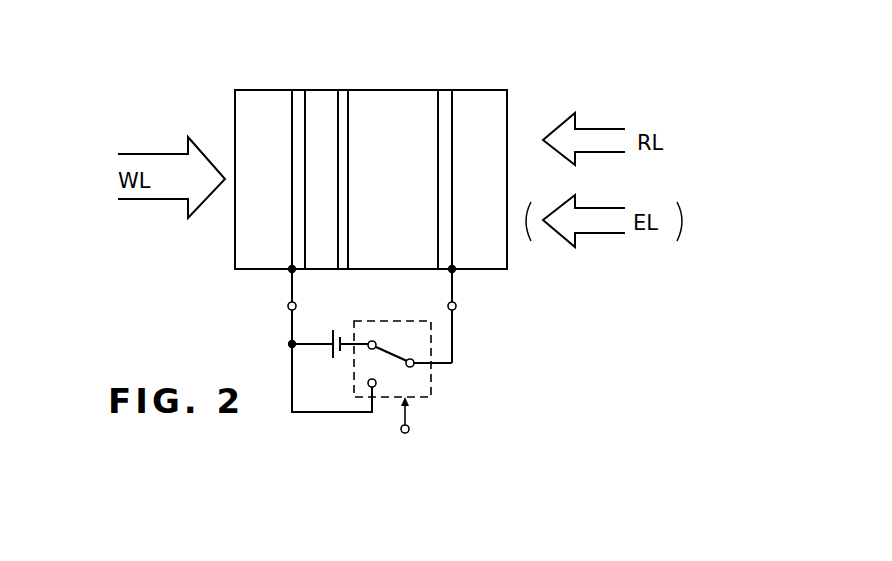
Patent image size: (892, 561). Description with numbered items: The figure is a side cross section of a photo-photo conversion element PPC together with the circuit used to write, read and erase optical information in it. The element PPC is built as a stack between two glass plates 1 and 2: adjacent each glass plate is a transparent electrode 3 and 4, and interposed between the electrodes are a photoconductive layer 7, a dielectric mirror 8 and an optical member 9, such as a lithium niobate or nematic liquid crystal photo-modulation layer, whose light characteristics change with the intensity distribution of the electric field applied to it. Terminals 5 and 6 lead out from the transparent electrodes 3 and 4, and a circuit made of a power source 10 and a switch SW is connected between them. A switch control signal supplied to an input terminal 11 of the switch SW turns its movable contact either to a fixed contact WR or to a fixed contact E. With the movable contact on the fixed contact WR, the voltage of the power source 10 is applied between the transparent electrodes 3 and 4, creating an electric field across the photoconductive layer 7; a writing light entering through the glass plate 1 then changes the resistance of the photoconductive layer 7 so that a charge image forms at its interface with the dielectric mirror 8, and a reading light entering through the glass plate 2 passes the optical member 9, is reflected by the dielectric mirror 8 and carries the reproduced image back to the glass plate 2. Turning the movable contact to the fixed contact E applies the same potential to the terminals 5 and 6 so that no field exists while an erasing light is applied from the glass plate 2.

The glass plate 1 is at (250, 99).
The glass plate 2 is at (498, 107).
The transparent electrode 3 is at (298, 97).
The transparent electrode 4 is at (445, 97).
The terminal 5 is at (288, 306).
The terminal 6 is at (456, 306).
The photoconductive layer 7 is at (318, 97).
The dielectric mirror 8 is at (343, 97).
The optical member 9 is at (390, 97).
The power source 10 is at (334, 328).
The input terminal 11 is at (409, 430).
The photo-photo conversion element PPC is at (479, 88).
The switch SW is at (368, 320).
The fixed contact WR is at (377, 342).
The fixed contact E is at (367, 383).